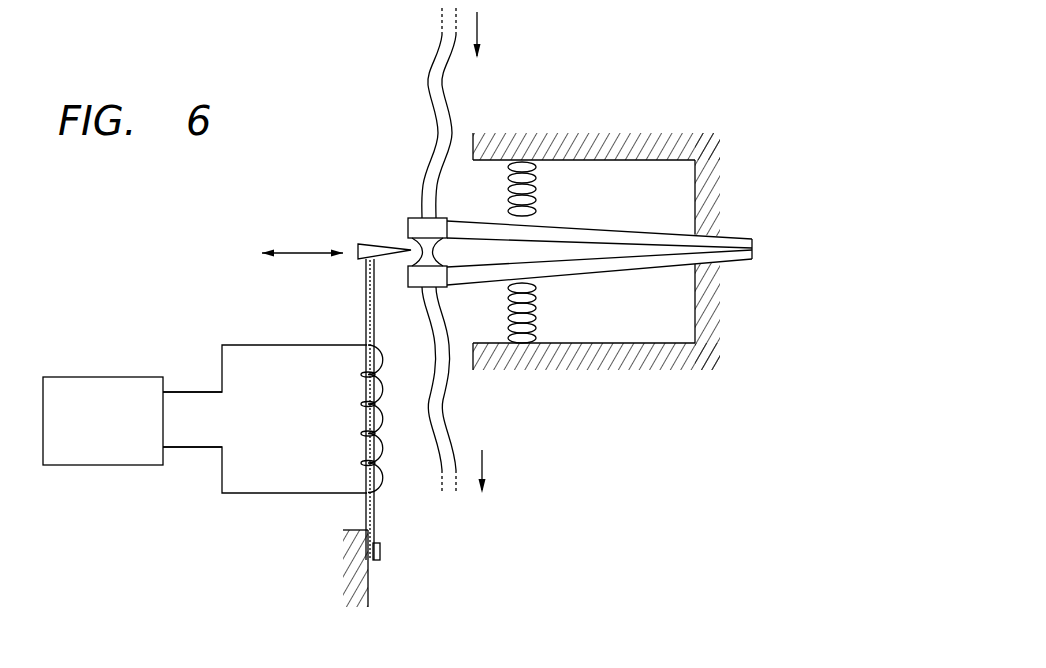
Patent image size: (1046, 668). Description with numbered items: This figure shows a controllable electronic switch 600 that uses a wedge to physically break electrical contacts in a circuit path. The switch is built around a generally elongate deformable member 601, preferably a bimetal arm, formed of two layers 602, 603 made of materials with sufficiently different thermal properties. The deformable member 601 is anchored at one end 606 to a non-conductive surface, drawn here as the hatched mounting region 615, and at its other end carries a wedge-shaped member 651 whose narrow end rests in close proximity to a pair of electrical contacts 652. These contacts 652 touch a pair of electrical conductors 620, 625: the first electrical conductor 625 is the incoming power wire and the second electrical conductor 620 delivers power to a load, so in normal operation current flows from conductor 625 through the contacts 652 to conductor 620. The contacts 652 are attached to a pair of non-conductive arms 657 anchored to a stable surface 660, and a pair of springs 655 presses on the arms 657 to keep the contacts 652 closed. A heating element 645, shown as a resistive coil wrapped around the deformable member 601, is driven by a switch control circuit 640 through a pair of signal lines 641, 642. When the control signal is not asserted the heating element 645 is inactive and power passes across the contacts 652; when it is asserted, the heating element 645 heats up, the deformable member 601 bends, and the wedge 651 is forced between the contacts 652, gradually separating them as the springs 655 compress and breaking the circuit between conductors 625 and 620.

The controllable electronic switch 600 is at (607, 39).
The deformable member 601 is at (356, 360).
The layer 602 is at (377, 523).
The layer 603 is at (367, 507).
The end 606 is at (383, 550).
The mount 615 is at (372, 585).
The second electrical conductor 620 is at (451, 395).
The first electrical conductor 625 is at (429, 90).
The switch control circuit 640 is at (78, 377).
The signal line 641 is at (220, 470).
The signal line 642 is at (220, 360).
The heating element 645 is at (385, 418).
The wedge-shaped member 651 is at (372, 243).
The electrical contacts 652 is at (418, 218).
The springs 655 is at (516, 170).
The non-conductive arms 657 is at (603, 343).
The stable surface 660 is at (603, 160).